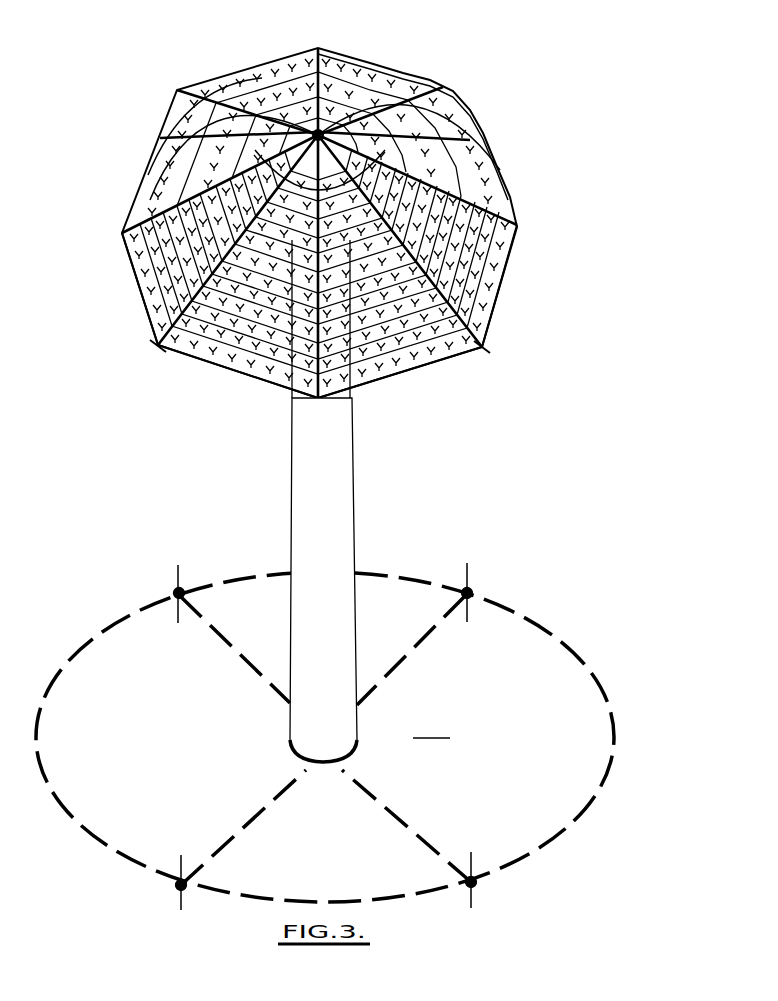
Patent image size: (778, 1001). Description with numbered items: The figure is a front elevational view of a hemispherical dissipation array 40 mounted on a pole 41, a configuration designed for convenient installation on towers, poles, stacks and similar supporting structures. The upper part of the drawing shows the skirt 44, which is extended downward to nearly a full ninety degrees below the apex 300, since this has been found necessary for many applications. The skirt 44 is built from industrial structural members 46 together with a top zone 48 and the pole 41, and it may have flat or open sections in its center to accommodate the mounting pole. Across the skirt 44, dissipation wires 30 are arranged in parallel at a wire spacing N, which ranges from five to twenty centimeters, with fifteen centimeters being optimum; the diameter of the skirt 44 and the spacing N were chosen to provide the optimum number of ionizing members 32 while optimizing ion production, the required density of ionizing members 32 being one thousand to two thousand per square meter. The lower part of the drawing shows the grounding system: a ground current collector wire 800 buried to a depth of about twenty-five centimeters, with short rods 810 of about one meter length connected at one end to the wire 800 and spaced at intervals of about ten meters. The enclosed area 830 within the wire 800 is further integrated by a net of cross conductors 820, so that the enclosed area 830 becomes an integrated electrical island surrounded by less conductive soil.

The apex 300 is at (330, 117).
The top zone 48 is at (365, 128).
The wire spacing N is at (160, 130).
The hemispherical dissipation array 40 is at (548, 168).
The ionizing members 32 is at (517, 208).
The industrial structural members 46 is at (495, 305).
The dissipation wires 30 is at (484, 348).
The skirt 44 is at (250, 388).
The pole 41 is at (342, 445).
The rods 810 is at (178, 565).
The cross conductors 820 is at (233, 650).
The ground current collector wire 800 is at (620, 712).
The enclosed area 830 is at (431, 727).